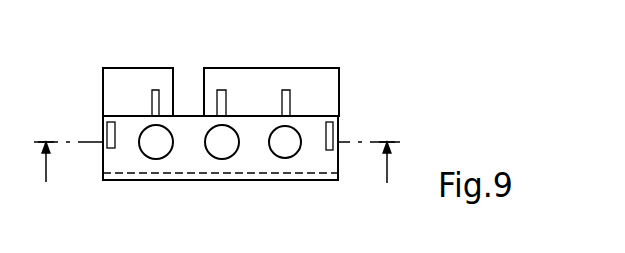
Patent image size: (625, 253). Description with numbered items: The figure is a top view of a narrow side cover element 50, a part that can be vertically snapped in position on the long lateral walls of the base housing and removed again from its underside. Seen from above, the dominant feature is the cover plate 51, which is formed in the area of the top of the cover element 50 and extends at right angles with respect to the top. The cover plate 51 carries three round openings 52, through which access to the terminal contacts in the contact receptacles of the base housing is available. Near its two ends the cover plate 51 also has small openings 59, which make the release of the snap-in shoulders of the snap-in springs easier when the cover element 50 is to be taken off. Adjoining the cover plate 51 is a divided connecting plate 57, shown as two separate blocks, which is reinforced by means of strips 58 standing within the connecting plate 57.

The narrow side cover element 50 is at (352, 59).
The cover plate 51 is at (182, 160).
The openings 52 is at (232, 157).
The divided connecting plate 57 is at (110, 88).
The strips 58 is at (158, 100).
The openings 59 is at (334, 130).